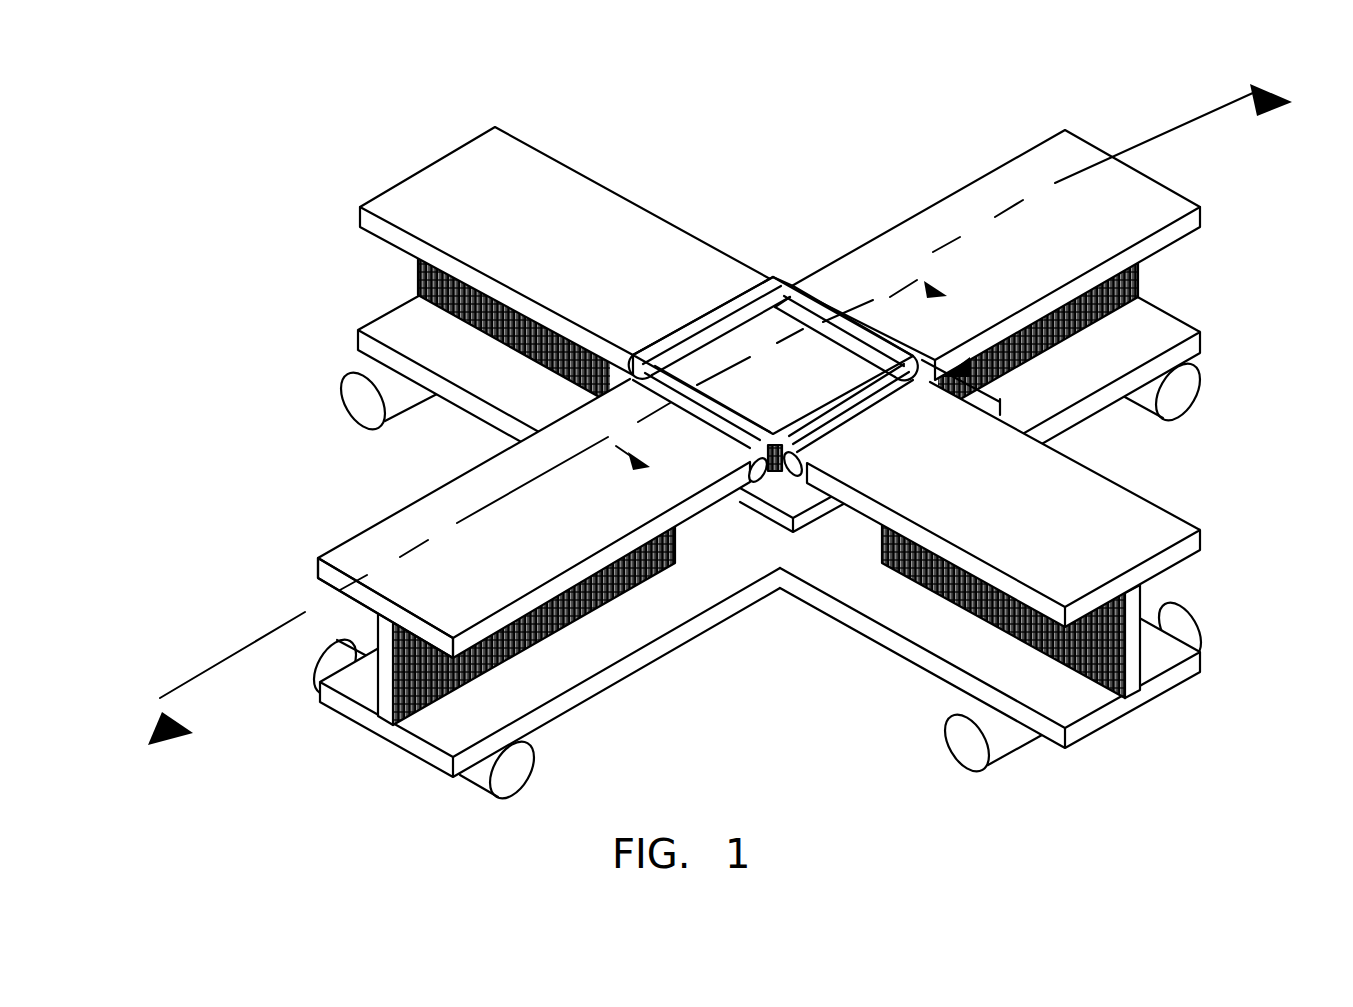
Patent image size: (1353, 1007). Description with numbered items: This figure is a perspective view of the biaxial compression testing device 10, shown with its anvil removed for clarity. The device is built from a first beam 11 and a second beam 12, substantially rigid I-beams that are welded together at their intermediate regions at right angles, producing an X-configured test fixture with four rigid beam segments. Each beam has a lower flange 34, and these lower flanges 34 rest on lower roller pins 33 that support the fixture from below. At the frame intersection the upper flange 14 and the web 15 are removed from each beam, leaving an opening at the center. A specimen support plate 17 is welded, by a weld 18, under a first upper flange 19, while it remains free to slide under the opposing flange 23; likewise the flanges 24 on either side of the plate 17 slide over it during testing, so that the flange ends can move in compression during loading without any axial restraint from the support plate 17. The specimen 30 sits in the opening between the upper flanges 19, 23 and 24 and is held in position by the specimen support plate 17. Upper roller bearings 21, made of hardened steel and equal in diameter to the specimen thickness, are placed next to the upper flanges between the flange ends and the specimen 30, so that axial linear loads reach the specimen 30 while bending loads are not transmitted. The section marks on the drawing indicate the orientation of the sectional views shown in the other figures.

The biaxial compression testing device 10 is at (740, 445).
The first beam 11 is at (545, 150).
The second beam 12 is at (1044, 248).
The upper flange 14 is at (488, 518).
The web 15 is at (417, 267).
The specimen support plate 17 is at (1000, 403).
The weld 18 is at (962, 377).
The first upper flange 19 is at (1200, 214).
The upper roller bearings 21 is at (800, 288).
The opposing flange 23 is at (348, 553).
The flanges 24 is at (505, 170).
The specimen 30 is at (836, 402).
The lower roller pins 33 is at (350, 352).
The lower flanges 34 is at (405, 318).